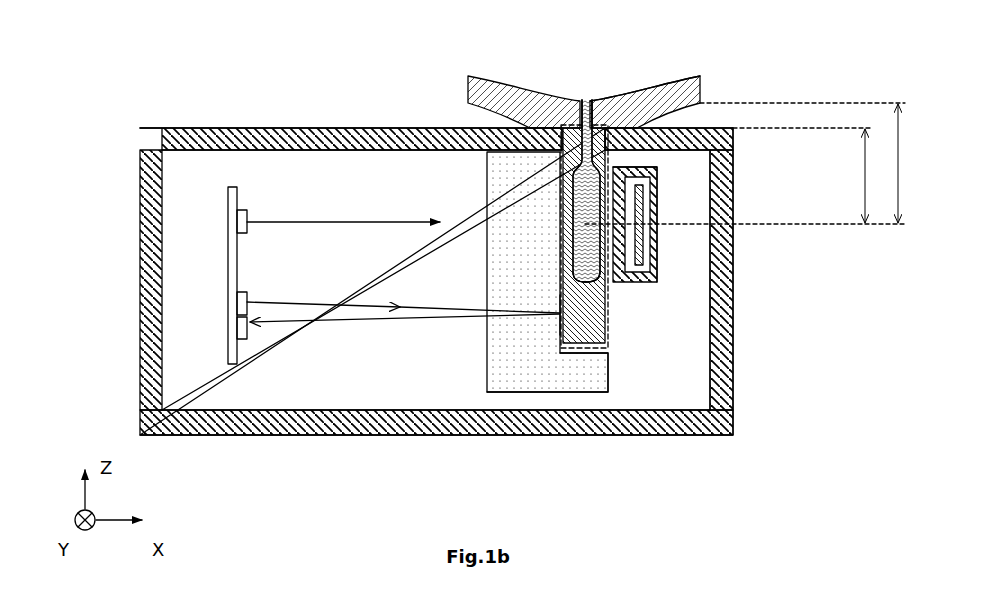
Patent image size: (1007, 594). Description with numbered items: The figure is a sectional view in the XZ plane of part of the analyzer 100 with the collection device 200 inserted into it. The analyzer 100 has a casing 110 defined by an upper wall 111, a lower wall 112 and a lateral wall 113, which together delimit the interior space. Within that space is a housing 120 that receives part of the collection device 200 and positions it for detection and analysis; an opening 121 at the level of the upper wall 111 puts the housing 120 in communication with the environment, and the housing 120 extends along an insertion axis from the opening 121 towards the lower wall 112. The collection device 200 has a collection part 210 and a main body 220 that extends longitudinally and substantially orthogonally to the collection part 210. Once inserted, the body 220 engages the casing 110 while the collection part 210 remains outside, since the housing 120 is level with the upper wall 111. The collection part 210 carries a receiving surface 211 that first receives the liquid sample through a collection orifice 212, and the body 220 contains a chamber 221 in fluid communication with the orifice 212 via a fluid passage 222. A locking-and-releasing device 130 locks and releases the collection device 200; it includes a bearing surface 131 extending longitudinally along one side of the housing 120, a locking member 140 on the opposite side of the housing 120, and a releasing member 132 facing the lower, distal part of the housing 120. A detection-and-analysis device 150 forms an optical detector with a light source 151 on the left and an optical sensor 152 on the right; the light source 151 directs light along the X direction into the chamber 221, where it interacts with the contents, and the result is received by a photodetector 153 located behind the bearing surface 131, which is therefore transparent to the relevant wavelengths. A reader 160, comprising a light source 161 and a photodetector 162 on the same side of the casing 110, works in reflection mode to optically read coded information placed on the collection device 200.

The analyzer 100 is at (287, 92).
The casing 110 is at (140, 167).
The upper wall 111 is at (172, 128).
The lower wall 112 is at (220, 436).
The lateral wall 113 is at (148, 196).
The housing 120 is at (610, 333).
The opening 121 is at (557, 142).
The locking-and-releasing device 130 is at (497, 393).
The bearing surface 131 is at (600, 195).
The releasing member 132 is at (585, 378).
The locking member 140 is at (497, 330).
The detection-and-analysis device 150 is at (208, 222).
The light source 151 is at (238, 228).
The optical sensor 152 is at (662, 241).
The photodetector 153 is at (655, 253).
The reader 160 is at (192, 300).
The light source 161 is at (238, 303).
The photodetector 162 is at (238, 330).
The collection device 200 is at (528, 62).
The collection part 210 is at (707, 75).
The receiving surface 211 is at (657, 87).
The collection orifice 212 is at (583, 100).
The main body 220 is at (610, 315).
The chamber 221 is at (590, 283).
The fluid passage 222 is at (605, 160).